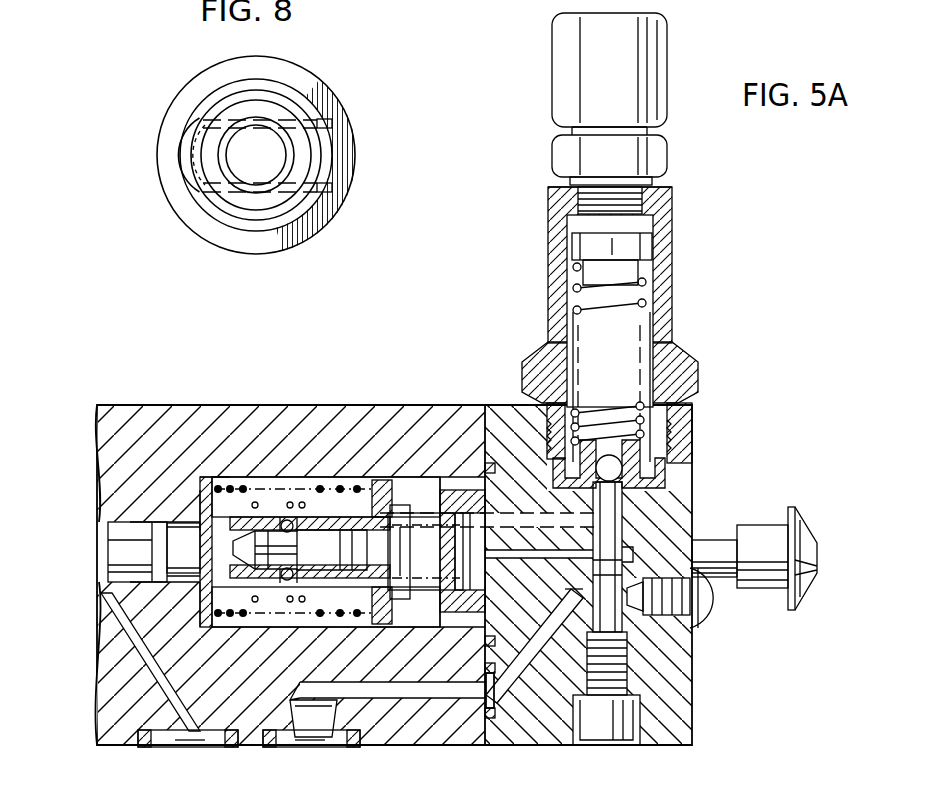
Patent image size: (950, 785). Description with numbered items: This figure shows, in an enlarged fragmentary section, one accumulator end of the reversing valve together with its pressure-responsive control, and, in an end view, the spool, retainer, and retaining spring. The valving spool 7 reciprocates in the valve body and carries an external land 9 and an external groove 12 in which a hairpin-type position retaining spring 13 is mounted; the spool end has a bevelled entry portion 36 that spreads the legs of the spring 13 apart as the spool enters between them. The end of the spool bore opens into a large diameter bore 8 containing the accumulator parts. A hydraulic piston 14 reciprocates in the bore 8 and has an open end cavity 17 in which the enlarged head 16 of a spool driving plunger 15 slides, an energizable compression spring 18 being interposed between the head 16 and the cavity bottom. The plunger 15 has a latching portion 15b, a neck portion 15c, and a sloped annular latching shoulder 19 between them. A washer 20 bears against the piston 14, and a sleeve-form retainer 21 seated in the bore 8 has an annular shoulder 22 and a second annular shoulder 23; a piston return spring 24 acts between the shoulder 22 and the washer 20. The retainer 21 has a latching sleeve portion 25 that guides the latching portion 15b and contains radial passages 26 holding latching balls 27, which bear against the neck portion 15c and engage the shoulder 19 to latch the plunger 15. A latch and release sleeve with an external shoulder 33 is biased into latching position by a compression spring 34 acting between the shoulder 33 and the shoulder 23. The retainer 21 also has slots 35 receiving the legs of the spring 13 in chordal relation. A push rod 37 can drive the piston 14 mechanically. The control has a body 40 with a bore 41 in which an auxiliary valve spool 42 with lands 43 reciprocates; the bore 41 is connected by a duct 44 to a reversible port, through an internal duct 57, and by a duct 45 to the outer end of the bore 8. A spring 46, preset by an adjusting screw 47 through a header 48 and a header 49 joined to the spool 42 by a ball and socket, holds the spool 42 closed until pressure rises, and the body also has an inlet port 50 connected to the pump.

In FIG. 5A, the valving spool 7 is at (125, 545).
In FIG. 5A, the large diameter bore 8 is at (310, 487).
In FIG. 5A, the external land 9 is at (160, 527).
In FIG. 5A, the external groove 12 is at (172, 594).
In FIG. 8, the position retaining spring 13 is at (183, 166).
In FIG. 5A, the position retaining spring 13 is at (200, 583).
In FIG. 5A, the hydraulic piston 14 is at (488, 468).
In FIG. 5A, the spool driving plunger 15 is at (300, 550).
In FIG. 5A, the latching portion 15b is at (341, 572).
In FIG. 5A, the neck portion 15c is at (268, 570).
In FIG. 5A, the enlarged head 16 is at (447, 515).
In FIG. 5A, the open end cavity 17 is at (412, 700).
In FIG. 5A, the energizable compression spring 18 is at (452, 540).
In FIG. 5A, the annular latching shoulder 19 is at (250, 484).
In FIG. 5A, the washer 20 is at (392, 512).
In FIG. 8, the retainer 21 is at (332, 76).
In FIG. 8, the annular shoulder 22 is at (353, 140).
In FIG. 8, the annular shoulder 23 is at (325, 164).
In FIG. 5A, the annular shoulder 23 is at (200, 492).
In FIG. 5A, the piston return spring 24 is at (360, 487).
In FIG. 8, the latching sleeve portion 25 is at (256, 197).
In FIG. 5A, the radial passages 26 is at (305, 585).
In FIG. 5A, the latching balls 27 is at (284, 582).
In FIG. 5A, the external shoulder 33 is at (289, 582).
In FIG. 5A, the compression spring 34 is at (200, 480).
In FIG. 5A, the slots 35 is at (198, 520).
In FIG. 5A, the bevelled entry portion 36 is at (210, 548).
In FIG. 5A, the push rod 37 is at (722, 538).
In FIG. 5A, the control body 40 is at (692, 699).
In FIG. 5A, the bore 41 is at (627, 634).
In FIG. 5A, the auxiliary valve spool 42 is at (597, 615).
In FIG. 5A, the lands 43 is at (622, 560).
In FIG. 5A, the duct 44 is at (497, 702).
In FIG. 5A, the duct 45 is at (520, 560).
In FIG. 5A, the spring 46 is at (645, 283).
In FIG. 5A, the adjusting screw 47 is at (662, 53).
In FIG. 5A, the header 48 is at (641, 247).
In FIG. 5A, the header 49 is at (612, 482).
In FIG. 5A, the inlet port 50 is at (205, 693).
In FIG. 5A, the internal duct 57 is at (297, 748).